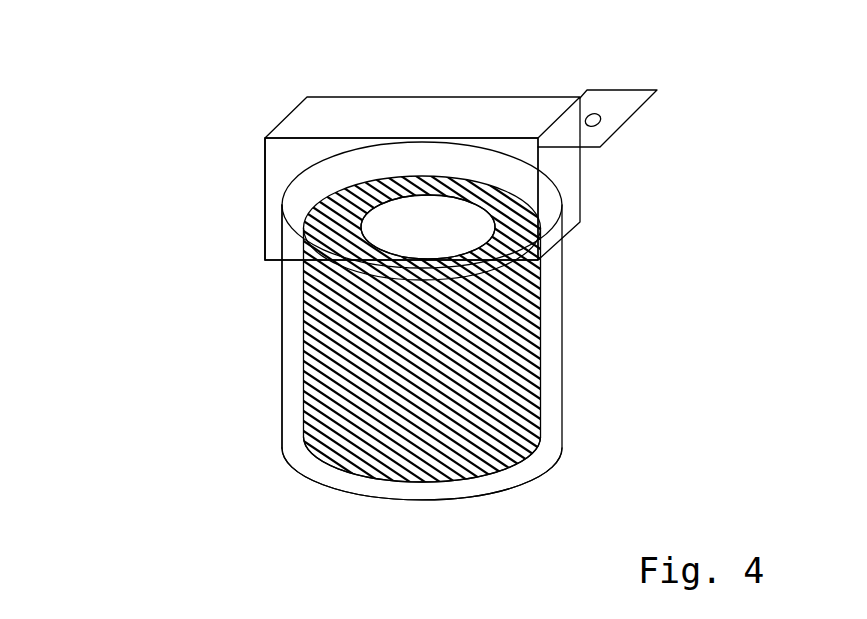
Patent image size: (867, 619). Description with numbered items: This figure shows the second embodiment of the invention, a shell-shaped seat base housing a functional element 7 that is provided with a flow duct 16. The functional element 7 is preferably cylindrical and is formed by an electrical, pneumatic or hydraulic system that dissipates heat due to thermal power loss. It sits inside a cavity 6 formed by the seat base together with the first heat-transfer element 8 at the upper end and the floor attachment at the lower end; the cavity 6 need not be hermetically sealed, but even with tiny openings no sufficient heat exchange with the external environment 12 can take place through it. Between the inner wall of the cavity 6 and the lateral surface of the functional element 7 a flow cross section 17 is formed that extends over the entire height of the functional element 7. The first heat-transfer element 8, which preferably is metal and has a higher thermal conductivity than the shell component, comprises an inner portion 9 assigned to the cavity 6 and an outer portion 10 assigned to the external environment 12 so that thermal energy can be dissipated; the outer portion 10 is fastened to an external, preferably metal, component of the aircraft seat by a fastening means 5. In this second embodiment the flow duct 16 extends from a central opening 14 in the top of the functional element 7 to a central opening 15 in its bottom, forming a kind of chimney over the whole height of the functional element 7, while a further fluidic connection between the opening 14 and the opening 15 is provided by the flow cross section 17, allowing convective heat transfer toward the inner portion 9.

The outer portion 10 is at (430, 118).
The fastening means 5 is at (597, 137).
The first heat-transfer element 8 is at (265, 220).
The flow cross section 17 is at (552, 283).
The cavity 6 is at (303, 464).
The inner portion 9 is at (513, 228).
The functional element 7 is at (507, 365).
The central opening in the bottom 15 is at (420, 487).
The flow duct 16 is at (420, 240).
The central opening in the top 14 is at (383, 235).
The external environment 12 is at (150, 317).